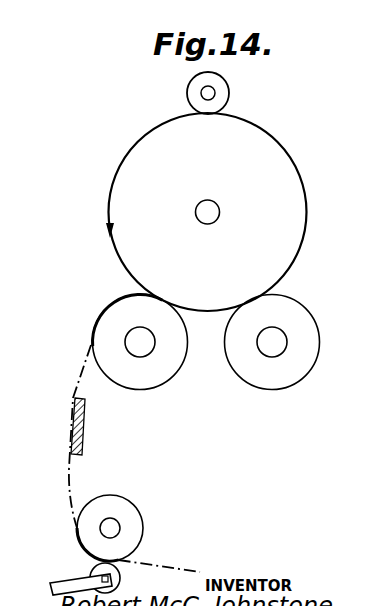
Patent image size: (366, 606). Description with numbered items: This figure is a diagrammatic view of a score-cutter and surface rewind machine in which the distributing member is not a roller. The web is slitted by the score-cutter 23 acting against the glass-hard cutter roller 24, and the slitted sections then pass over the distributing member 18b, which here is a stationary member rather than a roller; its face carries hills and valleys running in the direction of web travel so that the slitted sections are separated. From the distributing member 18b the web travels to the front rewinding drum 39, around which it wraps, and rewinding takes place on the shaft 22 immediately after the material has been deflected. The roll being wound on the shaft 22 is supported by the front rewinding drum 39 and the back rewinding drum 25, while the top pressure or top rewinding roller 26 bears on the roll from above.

The shaft 22 is at (219, 205).
The top pressure or top rewinding roller 26 is at (229, 93).
The back rewinding drum 25 is at (295, 325).
The front rewinding drum 39 is at (110, 327).
The distributing member 18b is at (72, 416).
The cutter roller 24 is at (128, 522).
The score-cutter 23 is at (88, 576).